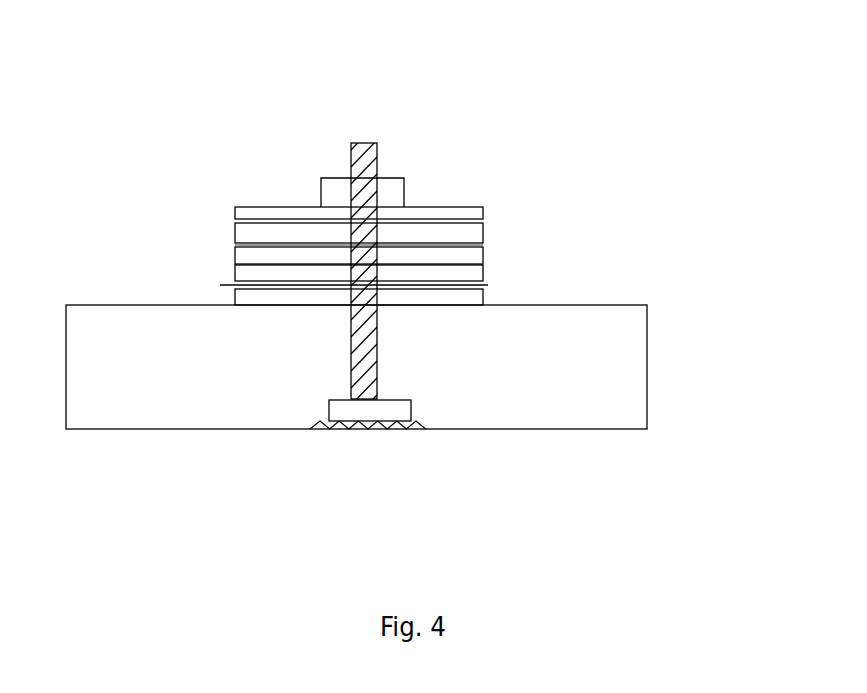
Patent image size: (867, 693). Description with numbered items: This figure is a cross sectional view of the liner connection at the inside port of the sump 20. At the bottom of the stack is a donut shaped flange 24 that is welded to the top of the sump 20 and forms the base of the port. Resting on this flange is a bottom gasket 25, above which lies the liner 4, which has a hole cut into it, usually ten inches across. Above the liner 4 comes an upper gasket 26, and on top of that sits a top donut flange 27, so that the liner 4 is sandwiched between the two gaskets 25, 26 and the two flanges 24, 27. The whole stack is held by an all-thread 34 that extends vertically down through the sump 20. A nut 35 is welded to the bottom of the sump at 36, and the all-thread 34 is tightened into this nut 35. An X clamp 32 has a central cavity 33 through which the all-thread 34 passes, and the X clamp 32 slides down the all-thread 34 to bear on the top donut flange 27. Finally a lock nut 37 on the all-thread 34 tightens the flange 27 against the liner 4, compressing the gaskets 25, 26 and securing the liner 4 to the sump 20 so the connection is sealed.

The sump 20 is at (594, 365).
The all-thread 34 is at (375, 143).
The lock nut 37 is at (392, 187).
The X clamp 32 is at (478, 210).
The top donut flange 27 is at (292, 233).
The central cavity 33 is at (286, 244).
The upper gasket 26 is at (245, 261).
The bottom gasket 25 is at (468, 271).
The liner 4 is at (222, 284).
The donut shaped flange 24 is at (306, 297).
The nut 35 is at (402, 413).
The weld location 36 is at (360, 424).